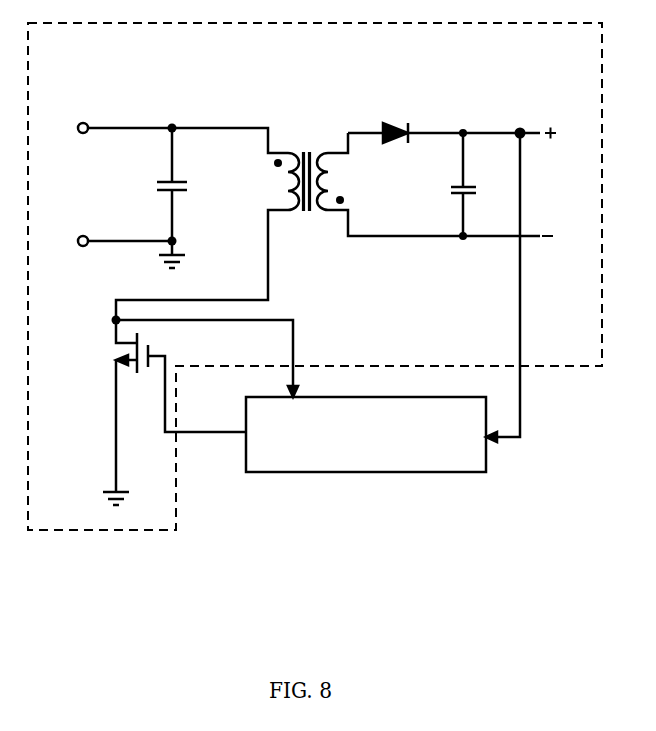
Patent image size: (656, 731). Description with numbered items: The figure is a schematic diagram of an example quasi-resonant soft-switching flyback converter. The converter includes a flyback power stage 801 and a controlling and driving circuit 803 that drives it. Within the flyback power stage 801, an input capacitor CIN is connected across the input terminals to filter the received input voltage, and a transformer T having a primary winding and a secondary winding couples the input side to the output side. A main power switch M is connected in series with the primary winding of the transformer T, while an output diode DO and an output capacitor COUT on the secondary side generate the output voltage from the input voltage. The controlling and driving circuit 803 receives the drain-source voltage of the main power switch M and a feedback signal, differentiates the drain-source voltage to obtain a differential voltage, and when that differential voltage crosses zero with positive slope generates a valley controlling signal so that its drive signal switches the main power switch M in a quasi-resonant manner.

The flyback power stage 801 is at (168, 84).
The controlling and driving circuit 803 is at (462, 459).
The input capacitor CIN is at (188, 184).
The transformer T is at (310, 159).
The output diode DO is at (398, 115).
The output capacitor COUT is at (437, 187).
The main power switch M is at (115, 353).